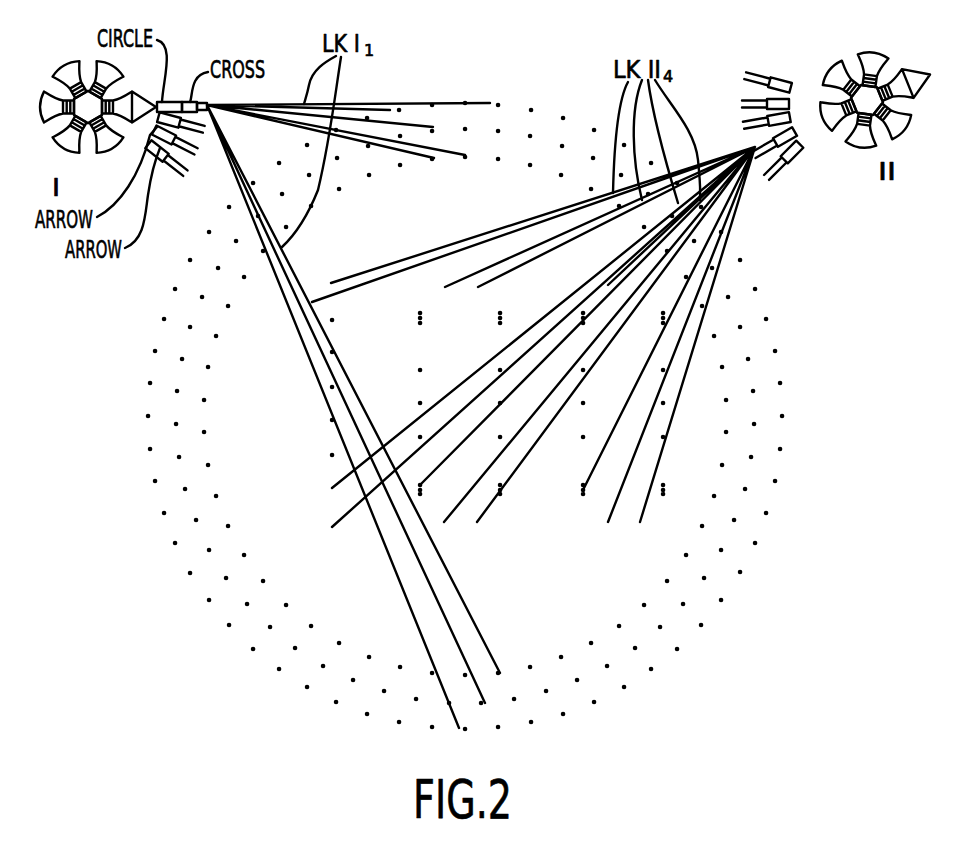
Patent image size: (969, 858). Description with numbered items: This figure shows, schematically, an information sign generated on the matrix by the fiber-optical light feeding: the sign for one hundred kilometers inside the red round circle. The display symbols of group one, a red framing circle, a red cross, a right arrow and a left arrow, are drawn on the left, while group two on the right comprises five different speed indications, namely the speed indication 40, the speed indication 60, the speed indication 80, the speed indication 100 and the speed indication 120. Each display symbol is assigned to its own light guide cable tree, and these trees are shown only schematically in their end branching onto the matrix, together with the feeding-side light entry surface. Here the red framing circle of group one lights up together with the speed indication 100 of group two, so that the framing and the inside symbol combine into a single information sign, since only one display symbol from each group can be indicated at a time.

The speed indication display symbol 40 is at (790, 100).
The speed indication display symbol 60 is at (778, 80).
The speed indication display symbol 80 is at (755, 112).
The speed indication display symbol 100 is at (796, 135).
The speed indication display symbol 120 is at (786, 162).